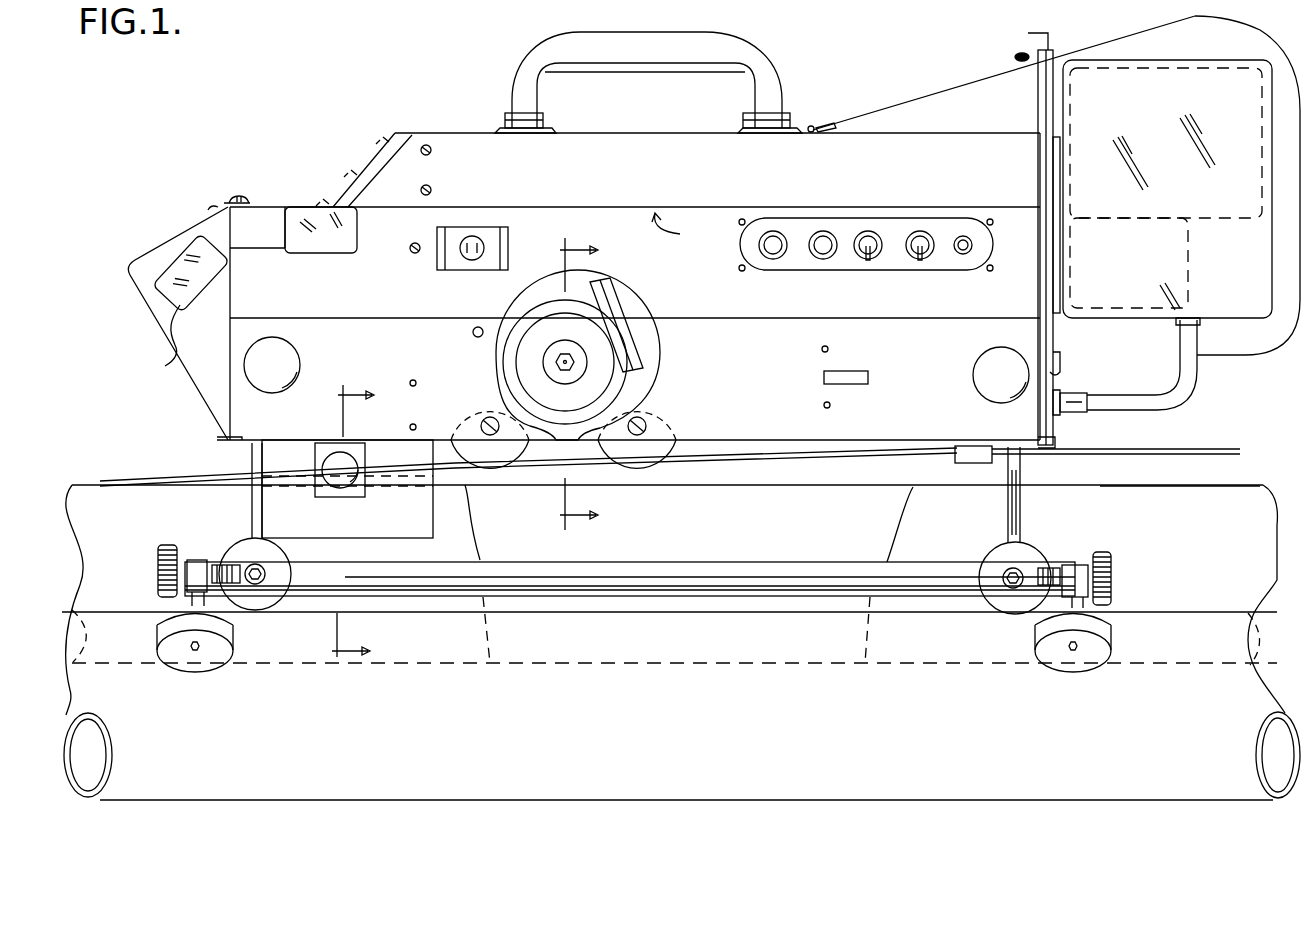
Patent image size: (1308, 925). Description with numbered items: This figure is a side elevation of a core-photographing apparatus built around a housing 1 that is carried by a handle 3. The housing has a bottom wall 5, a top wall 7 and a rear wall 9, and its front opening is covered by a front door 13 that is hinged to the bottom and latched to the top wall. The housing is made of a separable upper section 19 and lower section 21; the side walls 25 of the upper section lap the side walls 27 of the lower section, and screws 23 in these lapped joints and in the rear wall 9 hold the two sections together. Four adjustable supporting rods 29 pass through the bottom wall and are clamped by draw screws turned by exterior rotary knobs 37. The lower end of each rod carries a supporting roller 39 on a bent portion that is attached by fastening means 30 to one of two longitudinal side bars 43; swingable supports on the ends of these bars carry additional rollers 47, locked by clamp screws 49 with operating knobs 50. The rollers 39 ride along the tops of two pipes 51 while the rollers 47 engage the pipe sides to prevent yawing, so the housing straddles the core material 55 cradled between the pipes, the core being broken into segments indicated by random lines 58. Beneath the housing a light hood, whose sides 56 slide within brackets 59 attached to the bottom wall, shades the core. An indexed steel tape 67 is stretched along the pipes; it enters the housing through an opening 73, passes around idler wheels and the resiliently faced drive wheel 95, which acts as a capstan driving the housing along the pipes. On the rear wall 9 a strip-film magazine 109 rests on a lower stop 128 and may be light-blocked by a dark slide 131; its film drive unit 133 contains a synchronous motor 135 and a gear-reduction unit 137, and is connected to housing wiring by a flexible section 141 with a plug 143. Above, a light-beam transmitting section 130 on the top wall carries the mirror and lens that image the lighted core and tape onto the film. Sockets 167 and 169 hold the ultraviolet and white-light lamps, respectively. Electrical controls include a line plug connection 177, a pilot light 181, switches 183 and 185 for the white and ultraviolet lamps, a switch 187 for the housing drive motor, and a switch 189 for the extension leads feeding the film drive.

The housing 1 is at (339, 156).
The handle 3 is at (512, 78).
The bottom wall 5 is at (746, 488).
The top wall 7 is at (513, 435).
The rear wall 9 is at (1040, 312).
The front door 13 is at (215, 362).
The upper section 19 is at (706, 291).
The lower section 21 is at (756, 391).
The screws 23 is at (473, 334).
The side walls 25 is at (362, 299).
The side walls 27 is at (918, 403).
The adjustable supporting rods 29 is at (250, 458).
The fastening means 30 is at (262, 585).
The rotary knob 37 is at (290, 362).
The supporting roller 39 is at (238, 550).
The longitudinal side bars 43 is at (598, 572).
The rollers 47 is at (222, 663).
The clamp screws 49 is at (233, 608).
The operating knob 50 is at (157, 575).
The pipes 51 is at (300, 739).
The core material 55 is at (1215, 544).
The sides of the hood 56 is at (416, 523).
The random lines 58 is at (482, 540).
The bracket 59 is at (335, 482).
The indexed steel tape 67 is at (1203, 455).
The opening 73 is at (660, 355).
The drive wheel 95 is at (518, 362).
The strip-film magazine 109 is at (1243, 54).
The lower stop 128 is at (1056, 372).
The light-beam transmitting section 130 is at (872, 192).
The dark slide 131 is at (1028, 33).
The film drive unit 133 is at (1260, 288).
The synchronous motor 135 is at (1165, 312).
The gear-reduction unit 137 is at (1200, 75).
The flexible section 141 is at (1200, 388).
The plug 143 is at (1064, 400).
The sockets 167 is at (318, 250).
The sockets 169 is at (155, 345).
The line plug connection 177 is at (494, 248).
The pilot light 181 is at (415, 253).
The switch 183 is at (778, 252).
The switch 185 is at (828, 252).
The switch 187 is at (876, 252).
The switch 189 is at (926, 252).